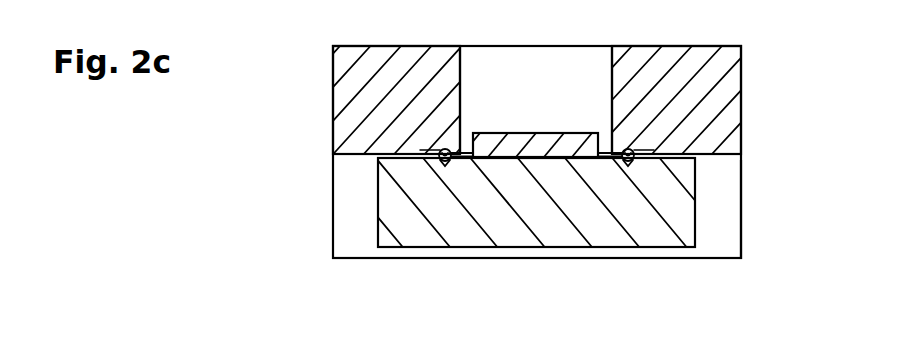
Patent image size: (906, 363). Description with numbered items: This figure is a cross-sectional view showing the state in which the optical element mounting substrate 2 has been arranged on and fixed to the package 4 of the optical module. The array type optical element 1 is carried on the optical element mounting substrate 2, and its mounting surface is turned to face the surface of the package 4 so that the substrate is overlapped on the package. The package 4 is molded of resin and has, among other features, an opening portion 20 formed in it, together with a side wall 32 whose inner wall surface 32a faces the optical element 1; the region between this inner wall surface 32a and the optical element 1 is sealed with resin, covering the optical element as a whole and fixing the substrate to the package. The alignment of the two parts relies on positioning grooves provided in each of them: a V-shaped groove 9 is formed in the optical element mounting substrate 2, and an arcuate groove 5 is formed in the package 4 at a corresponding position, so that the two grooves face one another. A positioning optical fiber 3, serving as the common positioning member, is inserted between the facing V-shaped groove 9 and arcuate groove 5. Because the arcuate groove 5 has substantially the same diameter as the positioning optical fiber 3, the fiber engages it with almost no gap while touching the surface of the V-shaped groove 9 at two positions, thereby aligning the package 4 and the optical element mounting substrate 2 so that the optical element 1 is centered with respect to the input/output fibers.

The optical element 1 is at (518, 148).
The optical element mounting substrate 2 is at (613, 232).
The positioning optical fiber 3 is at (437, 152).
The package 4 is at (713, 73).
The arcuate groove 5 is at (443, 152).
The V-shaped groove 9 is at (448, 162).
The opening portion 20 is at (571, 68).
The side wall 32 is at (707, 258).
The inner wall surface 32a is at (724, 237).